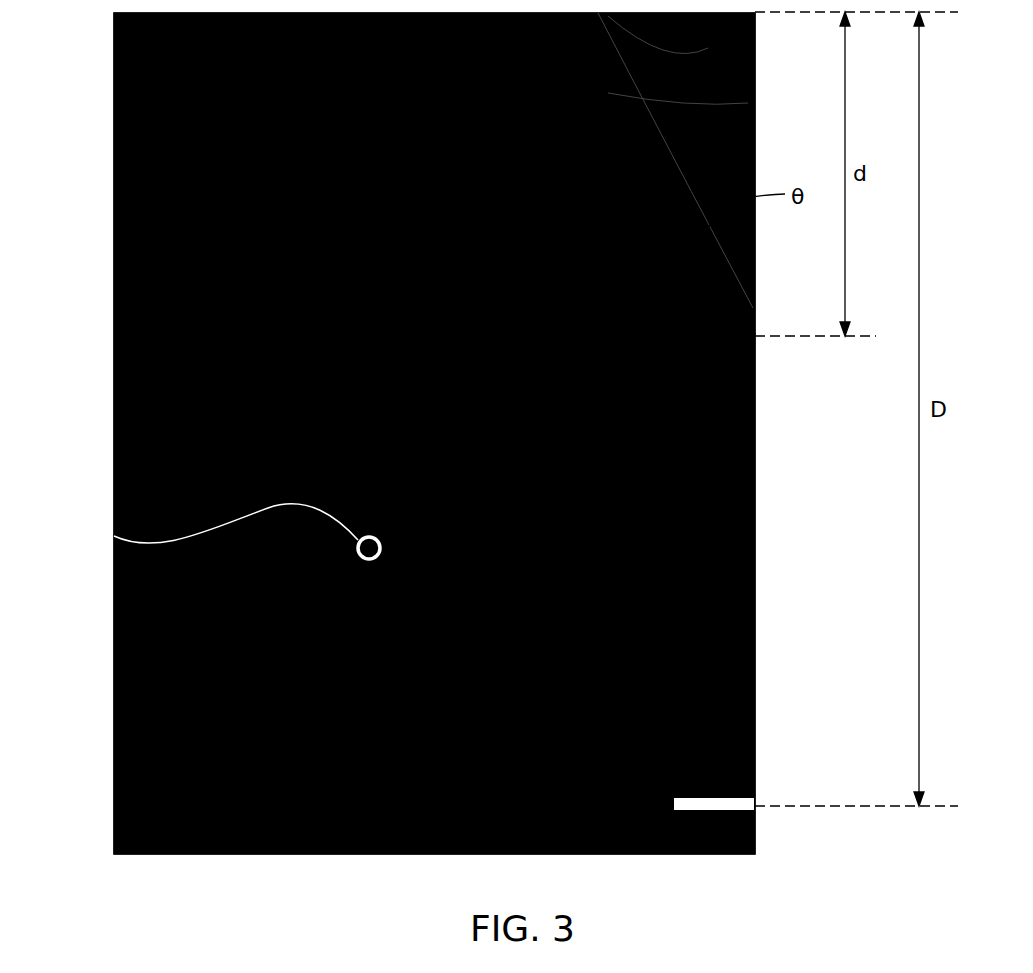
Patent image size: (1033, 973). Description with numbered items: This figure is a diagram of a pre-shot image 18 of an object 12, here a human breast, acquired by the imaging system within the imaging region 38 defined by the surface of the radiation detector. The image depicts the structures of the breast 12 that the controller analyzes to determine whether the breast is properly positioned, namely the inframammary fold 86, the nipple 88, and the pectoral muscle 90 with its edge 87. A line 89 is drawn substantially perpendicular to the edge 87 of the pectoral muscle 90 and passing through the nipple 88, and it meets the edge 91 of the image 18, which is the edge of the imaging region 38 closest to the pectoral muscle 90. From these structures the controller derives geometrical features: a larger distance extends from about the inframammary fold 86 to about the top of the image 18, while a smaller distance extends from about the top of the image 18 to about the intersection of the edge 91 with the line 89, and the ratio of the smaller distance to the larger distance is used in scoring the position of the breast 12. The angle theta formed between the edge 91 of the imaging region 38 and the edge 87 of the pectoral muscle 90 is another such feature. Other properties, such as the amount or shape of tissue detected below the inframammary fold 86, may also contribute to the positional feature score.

The object 12 is at (747, 508).
The pre-shot image 18 is at (90, 93).
The imaging region 38 is at (90, 327).
The inframammary fold 86 is at (711, 847).
The edge of the pectoral muscle 87 is at (747, 95).
The nipple 88 is at (106, 528).
The line 89 is at (747, 401).
The pectoral muscle 90 is at (747, 42).
The edge of the image 91 is at (747, 141).